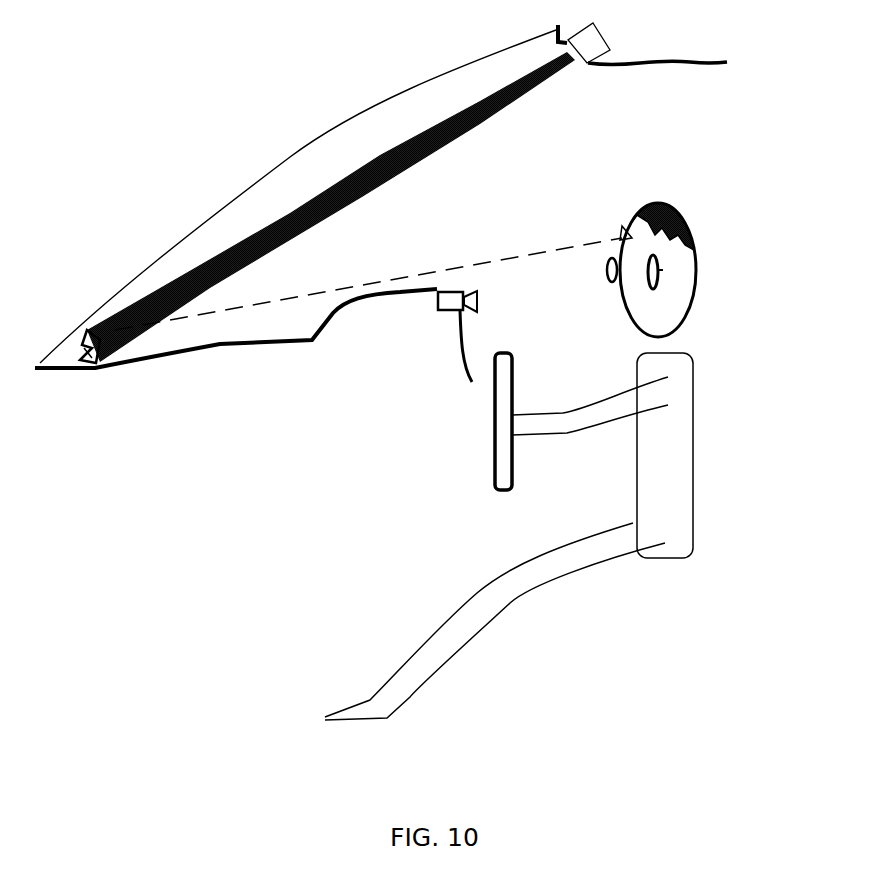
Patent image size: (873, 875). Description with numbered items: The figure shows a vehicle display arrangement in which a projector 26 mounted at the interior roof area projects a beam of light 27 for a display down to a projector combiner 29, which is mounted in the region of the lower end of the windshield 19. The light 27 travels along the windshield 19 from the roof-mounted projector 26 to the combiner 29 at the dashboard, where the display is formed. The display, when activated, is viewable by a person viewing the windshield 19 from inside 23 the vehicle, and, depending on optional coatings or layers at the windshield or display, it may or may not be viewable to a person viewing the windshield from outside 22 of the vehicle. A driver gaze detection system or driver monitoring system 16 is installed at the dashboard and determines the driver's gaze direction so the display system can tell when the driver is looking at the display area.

The driver gaze detection system 16 is at (450, 302).
The windshield 19 is at (298, 196).
The outside of the vehicle 22 is at (412, 92).
The inside of the vehicle 23 is at (315, 115).
The projector 26 is at (589, 43).
The light 27 is at (331, 207).
The projector combiner 29 is at (93, 368).